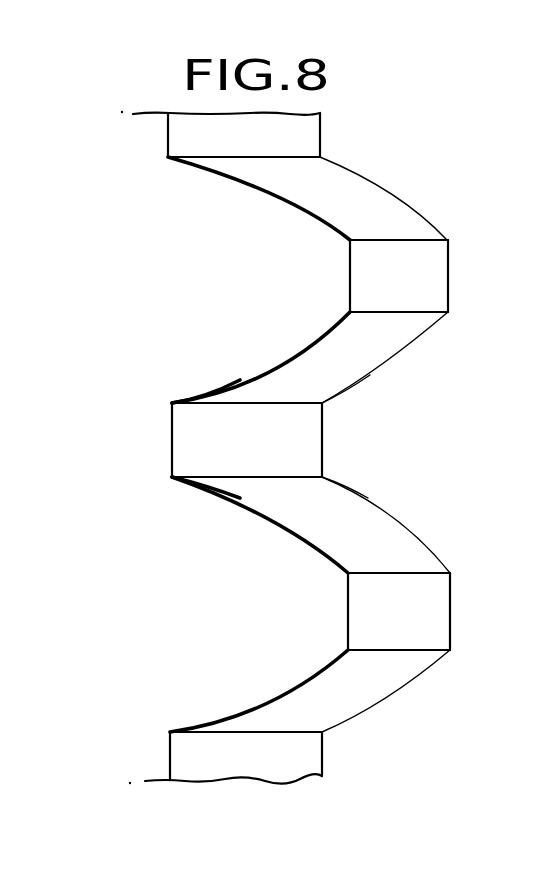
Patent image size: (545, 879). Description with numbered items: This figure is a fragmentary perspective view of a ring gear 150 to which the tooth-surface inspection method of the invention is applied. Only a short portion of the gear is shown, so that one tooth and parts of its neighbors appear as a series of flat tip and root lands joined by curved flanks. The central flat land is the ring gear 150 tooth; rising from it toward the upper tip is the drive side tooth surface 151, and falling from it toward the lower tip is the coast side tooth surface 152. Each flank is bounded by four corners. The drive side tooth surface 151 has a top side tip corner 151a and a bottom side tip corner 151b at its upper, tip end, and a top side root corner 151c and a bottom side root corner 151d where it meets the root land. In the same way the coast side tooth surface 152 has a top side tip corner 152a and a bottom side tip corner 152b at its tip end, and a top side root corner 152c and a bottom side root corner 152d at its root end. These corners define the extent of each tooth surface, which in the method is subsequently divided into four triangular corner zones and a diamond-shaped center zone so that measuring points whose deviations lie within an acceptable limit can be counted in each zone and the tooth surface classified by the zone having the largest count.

The ring gear 150 is at (302, 440).
The drive side tooth surface 151 is at (392, 335).
The top side tip corner 151a is at (448, 312).
The bottom side tip corner 151b is at (350, 312).
The top side root corner 151c is at (322, 404).
The bottom side root corner 151d is at (172, 402).
The coast side tooth surface 152 is at (392, 537).
The top side tip corner 152a is at (450, 572).
The bottom side tip corner 152b is at (348, 573).
The top side root corner 152c is at (322, 477).
The bottom side root corner 152d is at (172, 477).